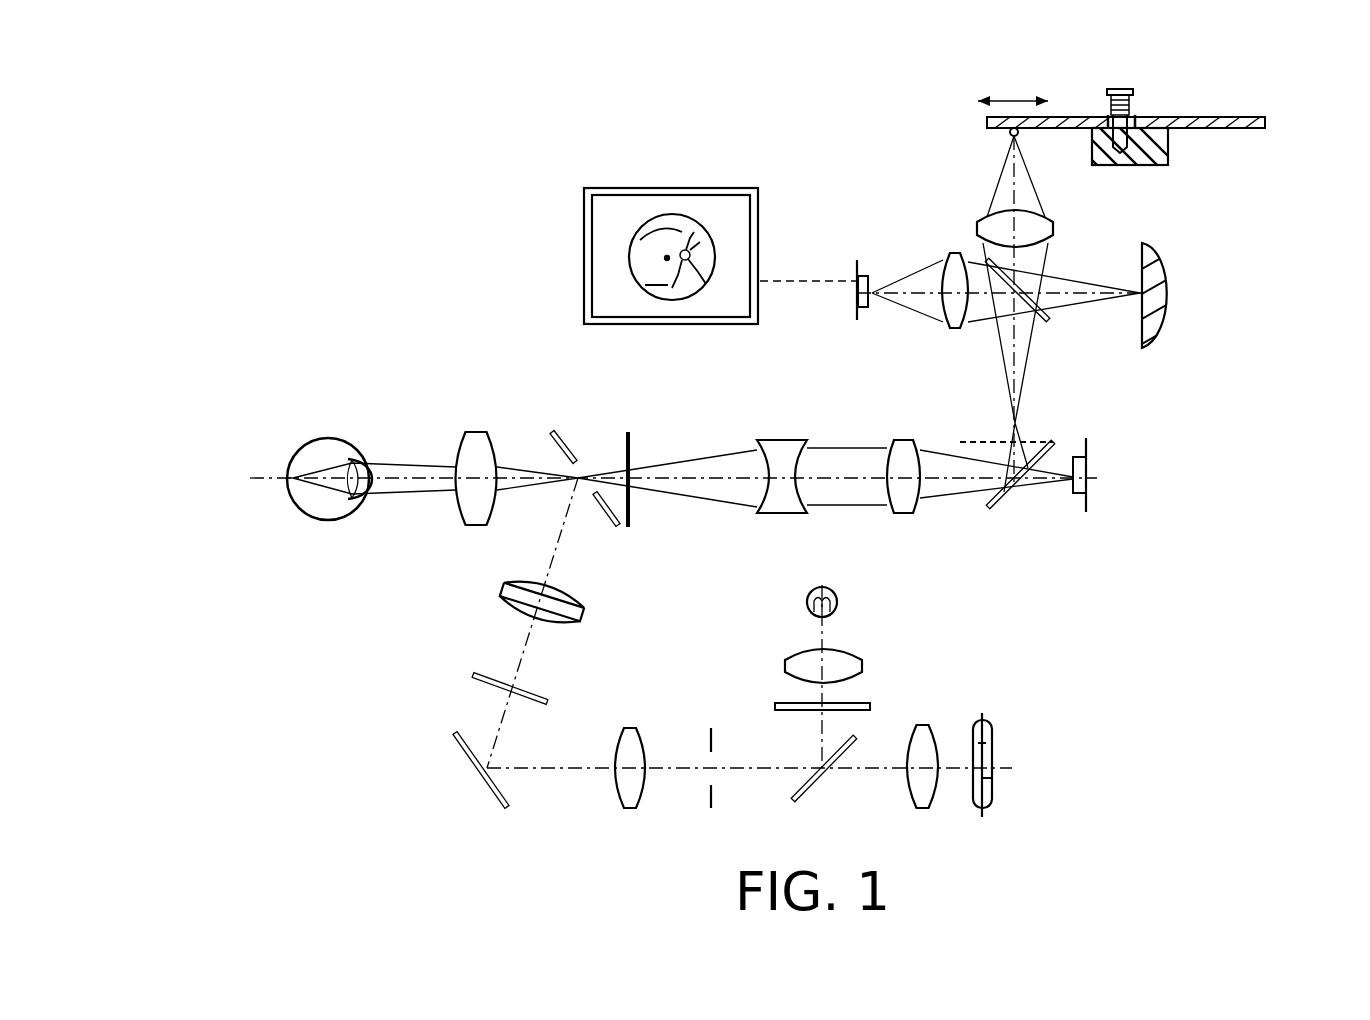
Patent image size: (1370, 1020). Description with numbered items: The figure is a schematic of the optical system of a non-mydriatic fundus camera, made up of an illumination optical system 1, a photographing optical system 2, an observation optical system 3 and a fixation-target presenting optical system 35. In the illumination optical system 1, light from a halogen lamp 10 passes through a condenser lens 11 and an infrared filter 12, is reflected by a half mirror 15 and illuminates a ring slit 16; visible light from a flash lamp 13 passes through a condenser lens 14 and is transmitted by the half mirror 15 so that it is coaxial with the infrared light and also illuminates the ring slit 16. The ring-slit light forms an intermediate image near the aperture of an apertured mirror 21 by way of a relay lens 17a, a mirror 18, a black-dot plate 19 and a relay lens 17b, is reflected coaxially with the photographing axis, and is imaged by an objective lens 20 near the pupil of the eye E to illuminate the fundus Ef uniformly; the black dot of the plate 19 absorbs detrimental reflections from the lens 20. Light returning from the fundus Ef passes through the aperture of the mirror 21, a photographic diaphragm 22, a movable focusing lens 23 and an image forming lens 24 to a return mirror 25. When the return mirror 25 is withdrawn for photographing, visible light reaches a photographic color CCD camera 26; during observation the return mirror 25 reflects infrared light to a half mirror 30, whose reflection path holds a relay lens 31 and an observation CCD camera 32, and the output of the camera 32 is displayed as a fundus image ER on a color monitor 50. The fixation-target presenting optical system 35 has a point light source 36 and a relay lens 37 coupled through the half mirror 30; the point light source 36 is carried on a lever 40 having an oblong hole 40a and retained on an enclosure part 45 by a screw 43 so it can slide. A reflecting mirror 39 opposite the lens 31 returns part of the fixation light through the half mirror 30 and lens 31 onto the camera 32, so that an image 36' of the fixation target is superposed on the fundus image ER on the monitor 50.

The eye to be examined E is at (323, 440).
The fundus Ef is at (295, 507).
The illumination optical system 1 is at (440, 637).
The photographing optical system 2 is at (825, 411).
The observation optical system 3 is at (912, 226).
The halogen lamp 10 is at (838, 605).
The condenser lens 11 is at (797, 660).
The infrared filter 12 is at (788, 704).
The flash lamp 13 is at (992, 778).
The condenser lens 14 is at (917, 730).
The half mirror 15 is at (800, 792).
The ring slit 16 is at (708, 748).
The relay lens 17a is at (618, 745).
The relay lens 17b is at (583, 618).
The mirror 18 is at (465, 752).
The black-dot plate 19 is at (522, 700).
The objective lens 20 is at (456, 524).
The apertured mirror 21 is at (556, 433).
The photographic diaphragm 22 is at (629, 437).
The focusing lens 23 is at (788, 515).
The image forming lens 24 is at (903, 515).
The return mirror 25 is at (993, 506).
The photographic color CCD camera 26 is at (1086, 468).
The half mirror 30 is at (1040, 322).
The relay lens 31 is at (957, 330).
The observation CCD camera 32 is at (863, 322).
The fixation-target presenting optical system 35 is at (978, 168).
The point light source 36 is at (965, 109).
The image of the fixation target 36' is at (589, 249).
The relay lens 37 is at (985, 218).
The reflecting mirror 39 is at (1142, 333).
The lever 40 is at (1252, 115).
The oblong hole 40a is at (1135, 120).
The screw 43 is at (1120, 90).
The enclosure part 45 is at (1170, 150).
The color monitor 50 is at (666, 190).
The fundus image ER is at (633, 233).